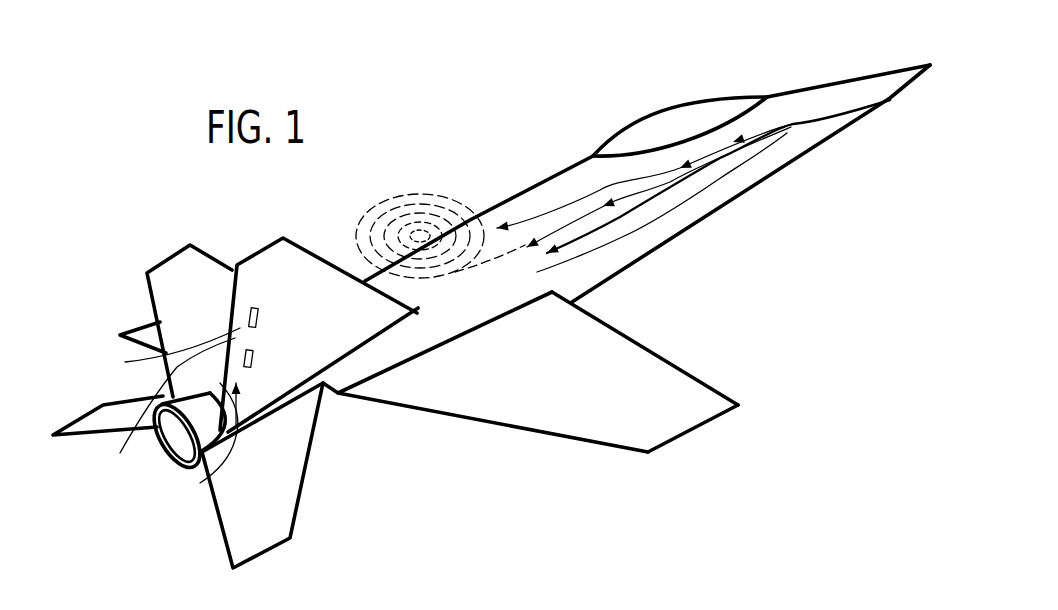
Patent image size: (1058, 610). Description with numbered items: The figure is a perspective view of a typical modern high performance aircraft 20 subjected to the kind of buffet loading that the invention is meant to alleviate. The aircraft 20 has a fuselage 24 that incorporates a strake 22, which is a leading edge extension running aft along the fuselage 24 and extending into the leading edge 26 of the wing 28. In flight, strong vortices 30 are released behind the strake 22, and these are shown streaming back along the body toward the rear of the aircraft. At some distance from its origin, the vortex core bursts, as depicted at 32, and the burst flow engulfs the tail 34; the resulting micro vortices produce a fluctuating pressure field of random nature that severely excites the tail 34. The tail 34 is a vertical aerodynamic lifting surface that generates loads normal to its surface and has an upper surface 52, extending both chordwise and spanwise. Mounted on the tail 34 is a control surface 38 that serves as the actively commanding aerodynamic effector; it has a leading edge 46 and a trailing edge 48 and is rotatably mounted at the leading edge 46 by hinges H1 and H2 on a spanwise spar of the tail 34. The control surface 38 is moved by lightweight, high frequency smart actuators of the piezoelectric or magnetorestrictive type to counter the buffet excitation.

The high performance aircraft 20 is at (745, 68).
The strake 22 is at (722, 177).
The fuselage 24 is at (851, 118).
The leading edge 26 is at (613, 323).
The wing 28 is at (670, 352).
The vortices 30 is at (533, 228).
The vortex core burst 32 is at (410, 195).
The vertical tail 34 is at (228, 440).
The control surface 38 is at (465, 405).
The leading edge 46 is at (257, 322).
The trailing edge 48 is at (563, 437).
The upper surface 52 is at (657, 428).
The hinge H1 is at (257, 308).
The hinge H2 is at (252, 357).